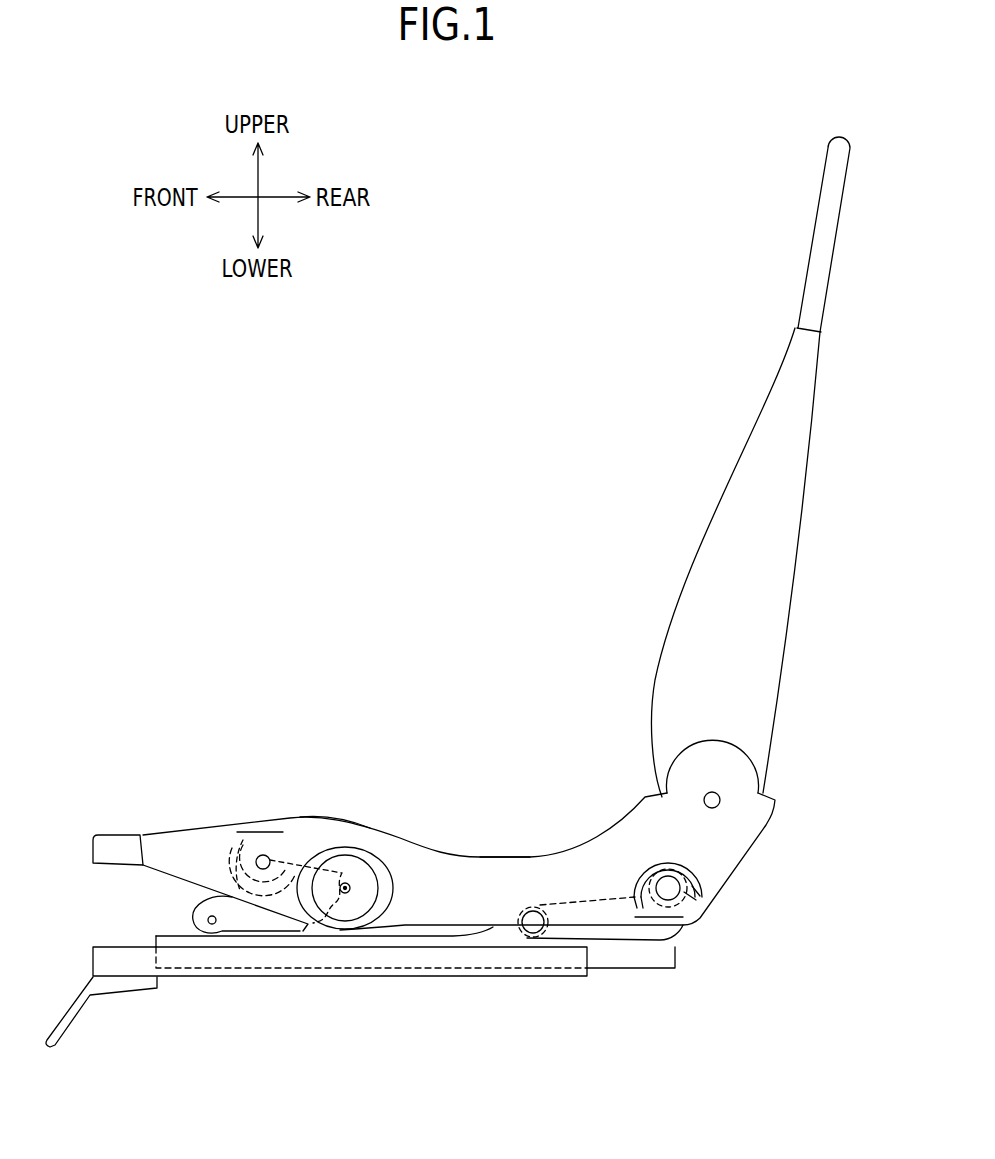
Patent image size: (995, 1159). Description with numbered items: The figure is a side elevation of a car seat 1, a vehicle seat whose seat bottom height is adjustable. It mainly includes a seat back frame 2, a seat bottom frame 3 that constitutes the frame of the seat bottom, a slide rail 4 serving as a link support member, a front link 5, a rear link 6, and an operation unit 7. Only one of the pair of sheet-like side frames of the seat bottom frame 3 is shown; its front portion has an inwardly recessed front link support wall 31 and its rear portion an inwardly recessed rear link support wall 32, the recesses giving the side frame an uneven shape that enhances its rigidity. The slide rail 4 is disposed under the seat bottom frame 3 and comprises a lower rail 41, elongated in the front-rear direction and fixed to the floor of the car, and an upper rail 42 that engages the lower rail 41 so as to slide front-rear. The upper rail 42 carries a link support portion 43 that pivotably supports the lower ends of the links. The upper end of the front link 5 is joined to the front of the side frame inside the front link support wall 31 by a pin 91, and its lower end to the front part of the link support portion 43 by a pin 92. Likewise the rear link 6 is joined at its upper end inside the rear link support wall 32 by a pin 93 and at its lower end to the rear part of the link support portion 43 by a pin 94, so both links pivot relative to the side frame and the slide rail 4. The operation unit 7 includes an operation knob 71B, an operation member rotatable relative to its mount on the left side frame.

The car seat 1 is at (338, 433).
The seat back frame 2 is at (690, 503).
The seat bottom frame 3 is at (507, 845).
The slide rail 4 is at (360, 1026).
The lower rail 41 is at (564, 990).
The upper rail 42 is at (649, 982).
The link support portion 43 is at (177, 935).
The front link 5 is at (262, 917).
The rear link 6 is at (657, 933).
The operation unit 7 is at (381, 833).
The operation knob 71B is at (373, 910).
The front link support wall 31 is at (275, 837).
The rear link support wall 32 is at (690, 897).
The pin 91 is at (255, 855).
The pin 92 is at (212, 925).
The pin 93 is at (672, 884).
The pin 94 is at (530, 934).